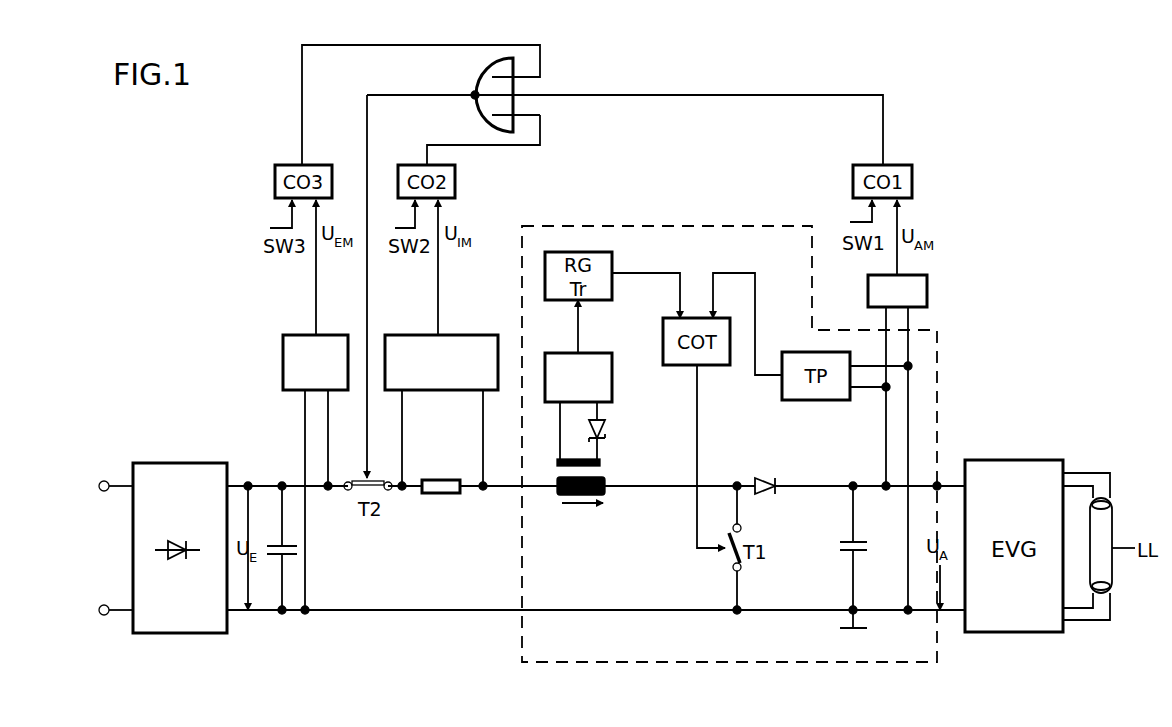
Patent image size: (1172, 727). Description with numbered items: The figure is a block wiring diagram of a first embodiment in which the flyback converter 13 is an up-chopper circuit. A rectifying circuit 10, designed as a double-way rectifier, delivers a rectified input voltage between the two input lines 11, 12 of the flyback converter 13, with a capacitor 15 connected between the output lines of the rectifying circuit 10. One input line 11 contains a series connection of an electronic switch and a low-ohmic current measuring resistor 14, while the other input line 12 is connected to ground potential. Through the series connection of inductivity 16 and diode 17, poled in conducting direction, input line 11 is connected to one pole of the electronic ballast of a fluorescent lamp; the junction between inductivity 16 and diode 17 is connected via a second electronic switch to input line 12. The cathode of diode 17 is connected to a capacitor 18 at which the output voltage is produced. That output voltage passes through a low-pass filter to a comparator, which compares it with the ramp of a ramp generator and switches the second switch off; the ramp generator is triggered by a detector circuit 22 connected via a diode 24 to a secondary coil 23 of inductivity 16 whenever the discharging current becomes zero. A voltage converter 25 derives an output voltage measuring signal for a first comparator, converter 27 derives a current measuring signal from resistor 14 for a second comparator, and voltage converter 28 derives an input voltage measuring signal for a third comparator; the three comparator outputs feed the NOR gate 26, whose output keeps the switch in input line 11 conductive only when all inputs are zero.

The rectifying circuit 10 is at (178, 625).
The input line 11 is at (497, 490).
The input line 12 is at (478, 612).
The flyback converter 13 is at (588, 655).
The current measuring resistor 14 is at (443, 495).
The capacitor 15 is at (297, 553).
The inductivity 16 is at (557, 480).
The diode 17 is at (762, 477).
The capacitor 18 is at (846, 554).
The detector circuit 22 is at (612, 391).
The secondary coil 23 is at (602, 462).
The diode 24 is at (608, 428).
The voltage converter 25 is at (927, 287).
The NOR gate 26 is at (485, 83).
The converter 27 is at (474, 340).
The voltage converter 28 is at (283, 348).